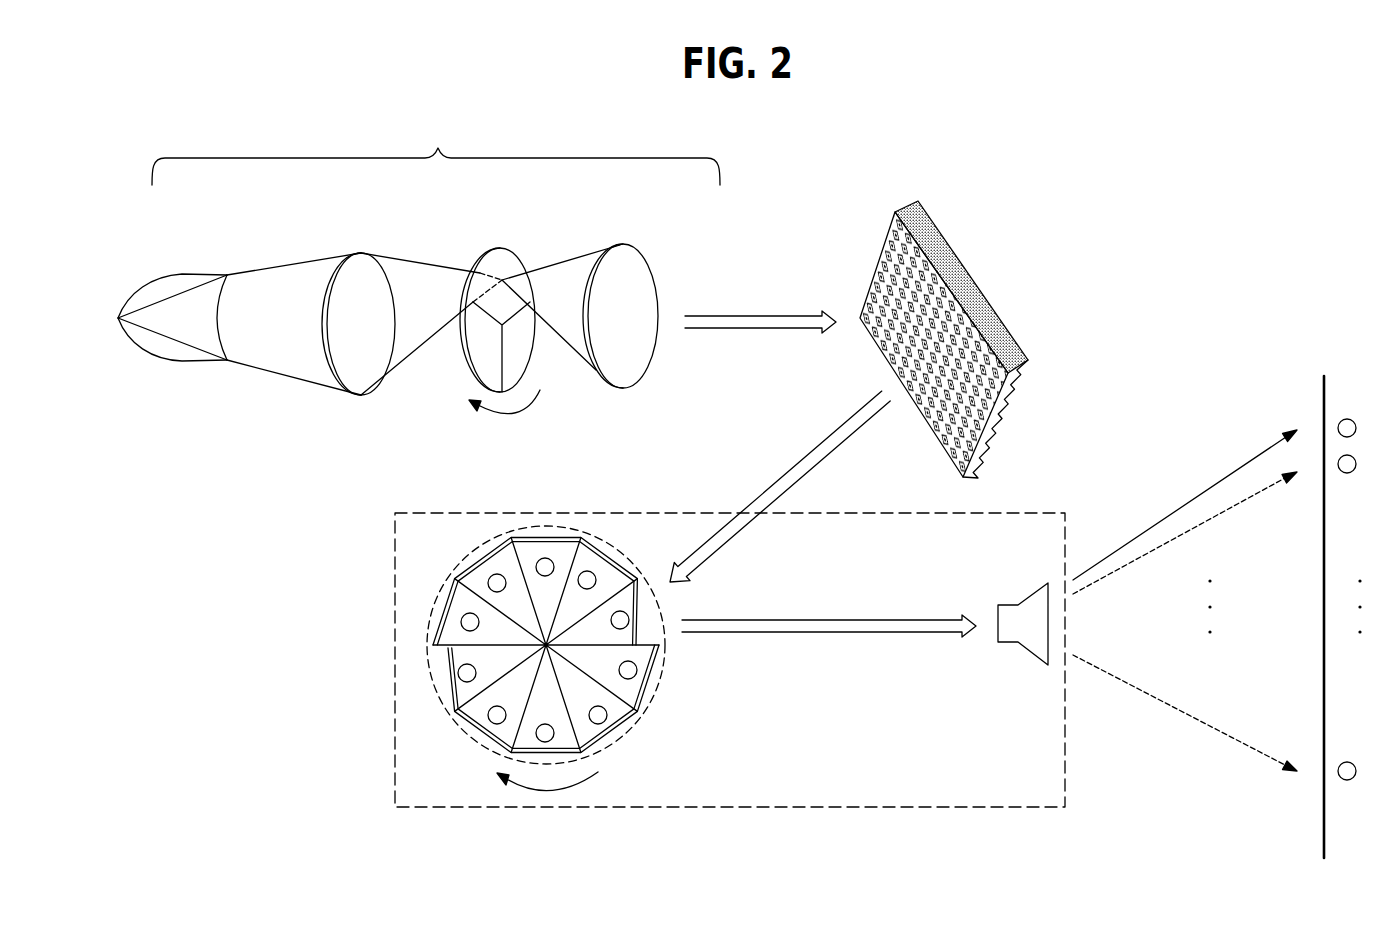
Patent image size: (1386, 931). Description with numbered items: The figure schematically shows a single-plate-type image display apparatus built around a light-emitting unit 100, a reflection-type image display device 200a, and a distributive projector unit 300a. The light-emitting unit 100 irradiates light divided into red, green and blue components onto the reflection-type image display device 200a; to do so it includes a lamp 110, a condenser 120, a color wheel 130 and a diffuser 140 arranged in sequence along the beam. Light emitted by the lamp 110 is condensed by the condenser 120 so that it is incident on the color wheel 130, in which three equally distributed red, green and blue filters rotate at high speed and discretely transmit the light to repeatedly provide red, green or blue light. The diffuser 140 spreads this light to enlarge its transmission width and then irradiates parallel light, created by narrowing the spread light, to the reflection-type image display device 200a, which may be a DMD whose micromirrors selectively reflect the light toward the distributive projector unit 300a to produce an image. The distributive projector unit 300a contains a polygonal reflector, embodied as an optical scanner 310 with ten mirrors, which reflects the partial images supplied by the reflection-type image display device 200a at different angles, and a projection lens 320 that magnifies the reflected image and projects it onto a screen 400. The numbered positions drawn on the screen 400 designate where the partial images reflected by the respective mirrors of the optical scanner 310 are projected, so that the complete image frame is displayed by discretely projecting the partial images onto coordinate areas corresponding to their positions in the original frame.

The light-emitting unit 100 is at (439, 147).
The lamp 110 is at (188, 273).
The condenser 120 is at (359, 252).
The color wheel 130 is at (502, 248).
The diffuser 140 is at (625, 245).
The reflection-type image display device 200a is at (963, 265).
The distributive projector unit 300a is at (1030, 513).
The optical scanner 310 is at (638, 708).
The projection lens 320 is at (1030, 650).
The screen 400 is at (1324, 815).